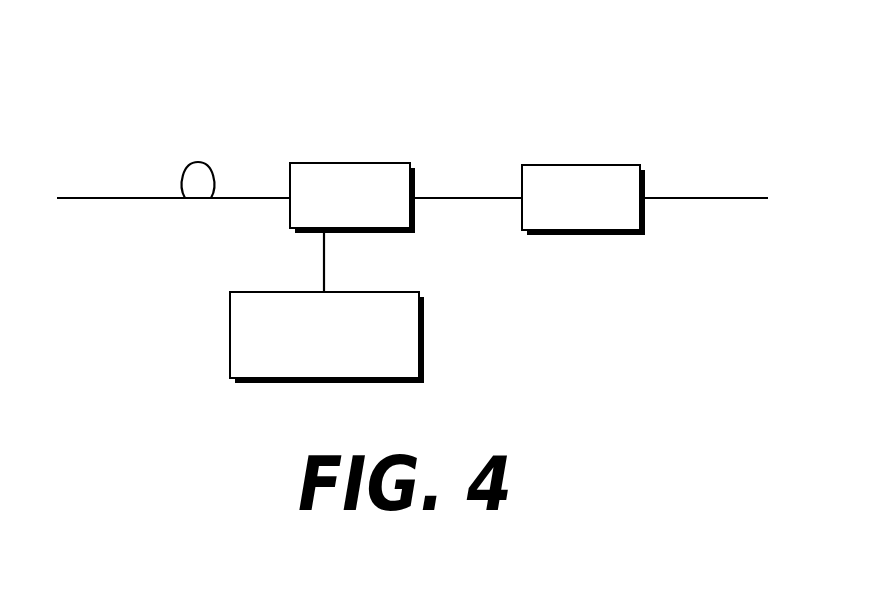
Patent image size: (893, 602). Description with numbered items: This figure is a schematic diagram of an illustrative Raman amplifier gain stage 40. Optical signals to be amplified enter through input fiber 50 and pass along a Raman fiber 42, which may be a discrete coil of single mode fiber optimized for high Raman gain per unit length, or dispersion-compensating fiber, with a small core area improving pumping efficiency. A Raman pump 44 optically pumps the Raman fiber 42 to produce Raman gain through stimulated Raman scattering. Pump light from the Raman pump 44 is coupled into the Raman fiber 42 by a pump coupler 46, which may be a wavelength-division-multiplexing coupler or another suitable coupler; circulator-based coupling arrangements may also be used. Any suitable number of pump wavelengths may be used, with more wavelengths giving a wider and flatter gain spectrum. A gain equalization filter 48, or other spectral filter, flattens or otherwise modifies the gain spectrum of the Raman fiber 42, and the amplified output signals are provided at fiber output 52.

The Raman amplifier gain stage 40 is at (728, 110).
The Raman fiber 42 is at (186, 142).
The Raman pump 44 is at (421, 326).
The pump coupler 46 is at (337, 162).
The gain equalization filter 48 is at (585, 165).
The input fiber 50 is at (129, 200).
The fiber output 52 is at (722, 201).